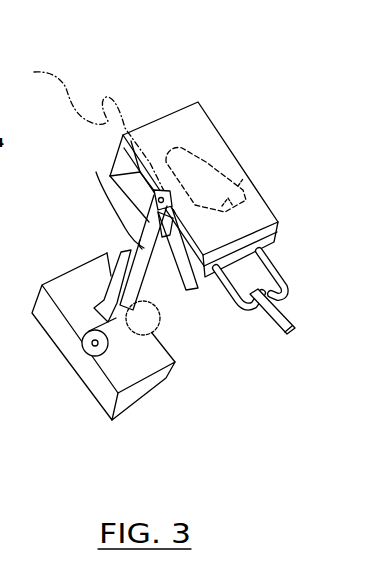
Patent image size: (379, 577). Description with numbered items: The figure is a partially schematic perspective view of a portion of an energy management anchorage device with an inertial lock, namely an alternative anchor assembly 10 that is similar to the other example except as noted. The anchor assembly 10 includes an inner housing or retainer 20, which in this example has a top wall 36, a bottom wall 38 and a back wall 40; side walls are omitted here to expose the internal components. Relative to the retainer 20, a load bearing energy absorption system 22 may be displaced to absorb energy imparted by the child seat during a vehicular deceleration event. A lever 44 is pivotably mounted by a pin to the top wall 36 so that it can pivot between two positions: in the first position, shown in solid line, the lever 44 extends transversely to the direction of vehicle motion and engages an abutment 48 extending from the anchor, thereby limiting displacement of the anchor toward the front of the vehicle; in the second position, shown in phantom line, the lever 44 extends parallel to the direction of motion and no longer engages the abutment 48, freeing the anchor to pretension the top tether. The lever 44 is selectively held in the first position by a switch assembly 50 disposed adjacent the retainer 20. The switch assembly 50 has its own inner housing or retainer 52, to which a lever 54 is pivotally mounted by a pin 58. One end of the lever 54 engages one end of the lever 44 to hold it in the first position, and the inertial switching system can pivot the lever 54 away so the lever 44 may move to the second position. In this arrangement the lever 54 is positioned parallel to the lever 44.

The anchor assembly 10 is at (266, 63).
The retainer 20 is at (176, 107).
The top wall 36 is at (207, 116).
The load bearing energy absorption system 22 is at (262, 200).
The lever 44 is at (104, 193).
The back wall 40 is at (114, 161).
The bottom wall 38 is at (109, 189).
The abutment 48 is at (161, 250).
The lever 54 is at (101, 275).
The retainer 52 is at (102, 375).
The pin 58 is at (92, 346).
The switch assembly 50 is at (144, 405).